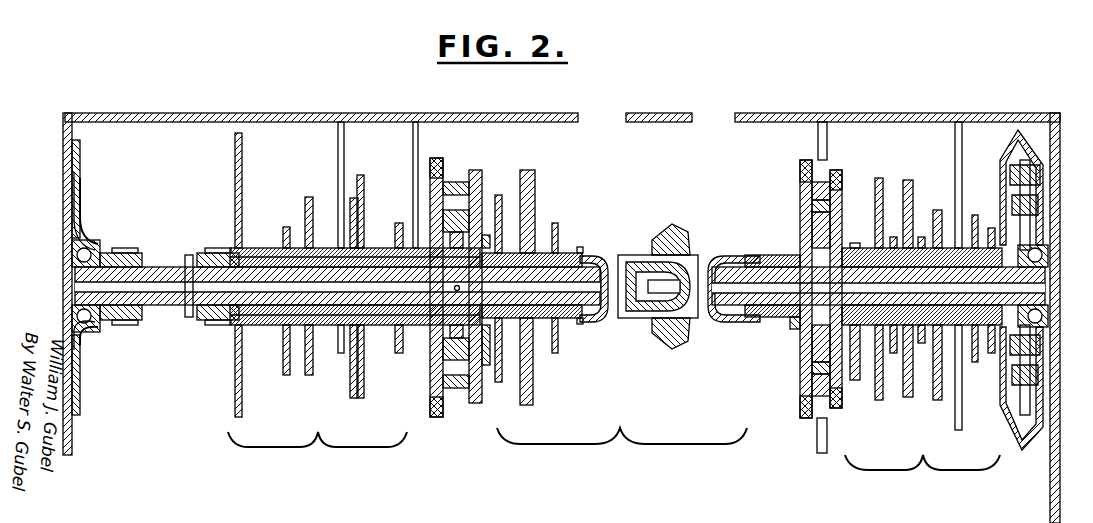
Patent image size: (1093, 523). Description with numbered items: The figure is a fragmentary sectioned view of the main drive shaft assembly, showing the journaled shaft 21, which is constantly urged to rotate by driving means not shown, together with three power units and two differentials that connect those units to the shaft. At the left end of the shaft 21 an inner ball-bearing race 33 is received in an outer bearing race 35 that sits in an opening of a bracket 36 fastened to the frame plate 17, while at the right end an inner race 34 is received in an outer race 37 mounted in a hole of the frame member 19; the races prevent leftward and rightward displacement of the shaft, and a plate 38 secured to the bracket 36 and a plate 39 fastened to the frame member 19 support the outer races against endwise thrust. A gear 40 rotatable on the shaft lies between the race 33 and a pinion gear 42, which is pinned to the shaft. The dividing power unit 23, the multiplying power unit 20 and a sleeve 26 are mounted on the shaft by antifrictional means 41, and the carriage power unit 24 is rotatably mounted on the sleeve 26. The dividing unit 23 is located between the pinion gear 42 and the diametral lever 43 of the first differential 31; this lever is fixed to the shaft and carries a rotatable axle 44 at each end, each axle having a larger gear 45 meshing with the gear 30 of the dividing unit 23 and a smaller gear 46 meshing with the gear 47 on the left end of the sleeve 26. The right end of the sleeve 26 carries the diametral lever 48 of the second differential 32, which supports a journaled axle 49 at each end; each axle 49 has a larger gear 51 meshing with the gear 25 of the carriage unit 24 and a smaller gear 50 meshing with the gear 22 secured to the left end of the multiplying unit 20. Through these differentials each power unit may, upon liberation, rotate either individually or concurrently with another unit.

The frame plate 17 is at (63, 150).
The frame member 19 is at (1050, 498).
The multiplying power unit 20 is at (922, 314).
The journaled shaft 21 is at (90, 290).
The gear 22 is at (832, 245).
The dividing power unit 23 is at (354, 305).
The carriage power unit 24 is at (628, 369).
The gear 25 is at (798, 327).
The sleeve 26 is at (618, 262).
The gear 30 is at (432, 245).
The differential 31 is at (482, 165).
The differential 32 is at (846, 168).
The inner ball-bearing race 33 is at (70, 312).
The inner ball-bearing race 34 is at (1048, 305).
The outer bearing race 35 is at (88, 330).
The bracket 36 is at (78, 178).
The outer race 37 is at (1045, 327).
The plate 38 is at (70, 236).
The plate 39 is at (1045, 252).
The gear 40 is at (128, 252).
The antifrictional means 41 is at (385, 310).
The pinion gear 42 is at (215, 252).
The diametral lever 43 is at (455, 392).
The axle 44 is at (432, 205).
The gear 45 is at (432, 172).
The gear 46 is at (487, 235).
The gear 47 is at (490, 250).
The diametral lever 48 is at (812, 355).
The axle 49 is at (812, 207).
The gear 50 is at (846, 178).
The gear 51 is at (806, 182).